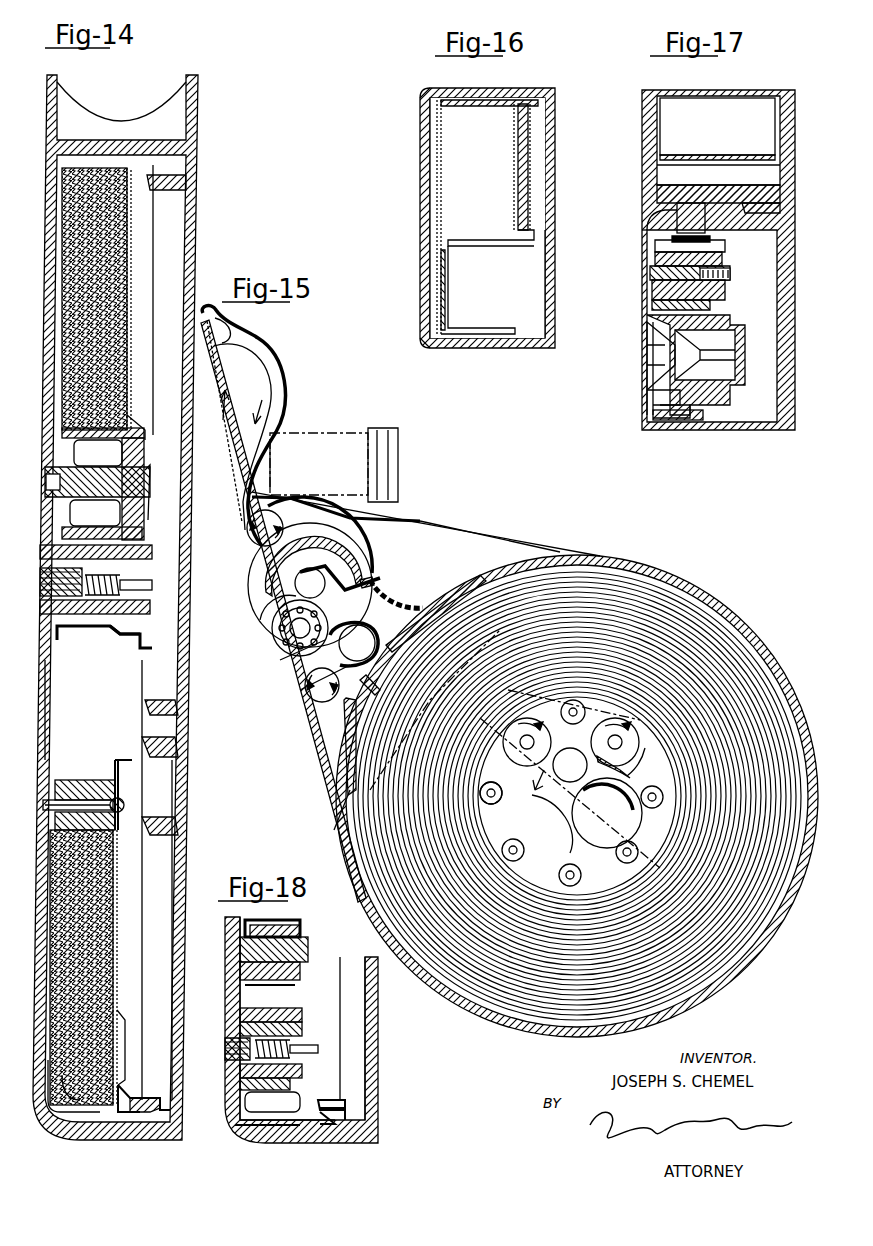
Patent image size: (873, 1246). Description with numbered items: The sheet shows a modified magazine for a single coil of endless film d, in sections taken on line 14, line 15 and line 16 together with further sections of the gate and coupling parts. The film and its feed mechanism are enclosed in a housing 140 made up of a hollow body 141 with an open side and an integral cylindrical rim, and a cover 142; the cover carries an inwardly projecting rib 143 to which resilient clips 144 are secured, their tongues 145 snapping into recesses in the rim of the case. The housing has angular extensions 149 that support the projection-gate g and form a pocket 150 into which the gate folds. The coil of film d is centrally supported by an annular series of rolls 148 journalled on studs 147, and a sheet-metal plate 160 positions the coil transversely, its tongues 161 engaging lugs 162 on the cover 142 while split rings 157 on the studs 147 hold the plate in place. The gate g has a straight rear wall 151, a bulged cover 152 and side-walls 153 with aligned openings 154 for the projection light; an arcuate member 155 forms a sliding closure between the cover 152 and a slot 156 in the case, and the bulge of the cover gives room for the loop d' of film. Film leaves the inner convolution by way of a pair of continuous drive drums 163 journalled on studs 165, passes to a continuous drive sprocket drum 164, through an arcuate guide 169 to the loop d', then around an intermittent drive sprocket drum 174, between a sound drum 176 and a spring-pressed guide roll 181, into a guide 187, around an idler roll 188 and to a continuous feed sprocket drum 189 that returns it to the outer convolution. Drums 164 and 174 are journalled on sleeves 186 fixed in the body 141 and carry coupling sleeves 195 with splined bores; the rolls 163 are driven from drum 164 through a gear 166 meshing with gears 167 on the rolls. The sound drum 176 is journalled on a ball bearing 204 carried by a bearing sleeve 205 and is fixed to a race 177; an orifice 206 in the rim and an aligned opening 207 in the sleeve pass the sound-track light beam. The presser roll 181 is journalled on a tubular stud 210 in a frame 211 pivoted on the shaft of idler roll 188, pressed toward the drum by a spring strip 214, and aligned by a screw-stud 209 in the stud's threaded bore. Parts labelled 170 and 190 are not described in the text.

In FIG. 14, the housing 140 is at (135, 1140).
In FIG. 14, the hollow body 141 is at (42, 700).
In FIG. 14, the cover 142 is at (186, 692).
In FIG. 15, the cover 142 is at (186, 692).
In FIG. 18, the cover 142 is at (370, 1036).
In FIG. 18, the inwardly projecting rib 143 is at (348, 1108).
In FIG. 18, the resilient clips 144 is at (350, 1100).
In FIG. 18, the resilient tongues 145 is at (325, 1143).
In FIG. 14, the studs 147 is at (105, 760).
In FIG. 14, the rolls 148 is at (60, 780).
In FIG. 15, the rolls 148 is at (492, 804).
In FIG. 15, the angular extensions 149 is at (460, 515).
In FIG. 15, the pocket 150 is at (422, 545).
In FIG. 15, the rear wall 151 is at (232, 508).
In FIG. 16, the rear wall 151 is at (425, 250).
In FIG. 17, the rear wall 151 is at (720, 96).
In FIG. 15, the cover 152 is at (268, 425).
In FIG. 16, the cover 152 is at (548, 312).
In FIG. 17, the cover 152 is at (712, 150).
In FIG. 16, the side-walls 153 is at (478, 88).
In FIG. 17, the side-walls 153 is at (660, 126).
In FIG. 15, the aligned openings 154 is at (262, 450).
In FIG. 16, the aligned openings 154 is at (548, 159).
In FIG. 15, the arcuate member 155 is at (338, 527).
In FIG. 15, the slot 156 is at (362, 575).
In FIG. 14, the split rings 157 is at (120, 800).
In FIG. 14, the plate 160 is at (120, 873).
In FIG. 14, the tongues 161 is at (126, 1030).
In FIG. 14, the lugs 162 is at (124, 1073).
In FIG. 14, the continuous drive drums 163 is at (80, 446).
In FIG. 15, the continuous drive drums 163 is at (596, 742).
In FIG. 14, the continuous drive sprocket drum 164 is at (75, 636).
In FIG. 15, the continuous drive sprocket drum 164 is at (572, 780).
In FIG. 14, the studs 165 is at (146, 505).
In FIG. 14, the gear 166 is at (138, 645).
In FIG. 14, the gears 167 is at (135, 425).
In FIG. 15, the arcuate guide 169 is at (612, 810).
In FIG. 16, the strip 170 is at (452, 282).
In FIG. 15, the intermittent drive sprocket drum 174 is at (246, 538).
In FIG. 15, the sound drum 176 is at (272, 629).
In FIG. 17, the sound drum 176 is at (678, 430).
In FIG. 17, the race 177 is at (732, 340).
In FIG. 15, the spring-pressed guide roll 181 is at (290, 592).
In FIG. 17, the spring-pressed guide roll 181 is at (724, 258).
In FIG. 14, the sleeve 186 is at (120, 548).
In FIG. 18, the sleeve 186 is at (305, 1016).
In FIG. 15, the guide 187 is at (366, 616).
In FIG. 18, the guide 187 is at (310, 930).
In FIG. 15, the idler roll 188 is at (364, 632).
In FIG. 18, the idler roll 188 is at (305, 920).
In FIG. 15, the continuous feed sprocket drum 189 is at (304, 692).
In FIG. 18, the continuous feed sprocket drum 189 is at (258, 1010).
In FIG. 18, the slot 190 is at (272, 1103).
In FIG. 14, the coupling sleeve 195 is at (140, 604).
In FIG. 18, the coupling sleeve 195 is at (300, 1031).
In FIG. 17, the ball bearing 204 is at (645, 352).
In FIG. 17, the bearing sleeve 205 is at (650, 395).
In FIG. 17, the orifice 206 is at (660, 422).
In FIG. 17, the opening 207 is at (650, 368).
In FIG. 17, the screw-stud 209 is at (732, 290).
In FIG. 17, the tubular stud 210 is at (648, 273).
In FIG. 17, the frame 211 is at (726, 243).
In FIG. 17, the spring strip 214 is at (705, 225).
In FIG. 15, the section line 14— 14 is at (512, 500).
In FIG. 14, the section line 15— 15 is at (118, 170).
In FIG. 15, the section line 16— 16 is at (300, 480).
In FIG. 15, the endless film d is at (577, 785).
In FIG. 15, the loop d' is at (241, 387).
In FIG. 15, the projection-gate g is at (282, 355).